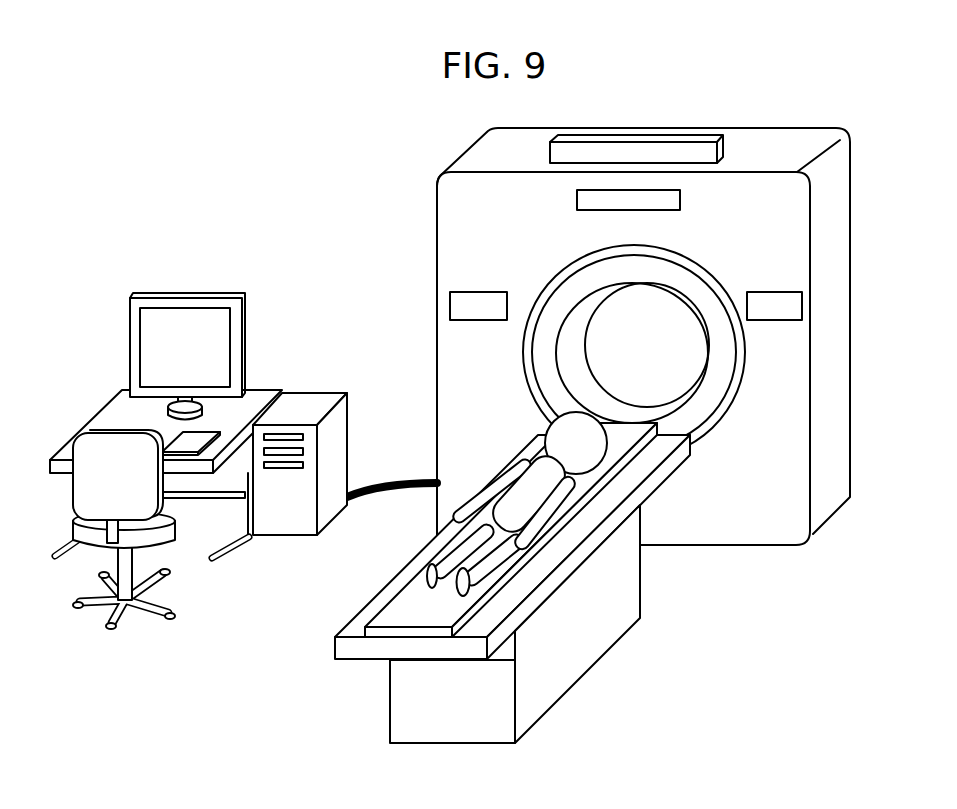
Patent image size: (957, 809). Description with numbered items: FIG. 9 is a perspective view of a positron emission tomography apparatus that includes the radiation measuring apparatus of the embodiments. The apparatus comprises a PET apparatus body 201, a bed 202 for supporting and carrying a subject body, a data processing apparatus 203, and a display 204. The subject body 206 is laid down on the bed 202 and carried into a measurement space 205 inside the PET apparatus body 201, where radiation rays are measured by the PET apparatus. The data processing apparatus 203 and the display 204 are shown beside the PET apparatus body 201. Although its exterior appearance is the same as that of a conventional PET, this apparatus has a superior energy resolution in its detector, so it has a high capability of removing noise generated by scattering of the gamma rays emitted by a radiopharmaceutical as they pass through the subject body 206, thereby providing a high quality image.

The PET apparatus body 201 is at (557, 255).
The bed 202 is at (415, 650).
The data processing apparatus 203 is at (284, 527).
The display 204 is at (175, 333).
The measurement space 205 is at (678, 372).
The subject body 206 is at (530, 492).